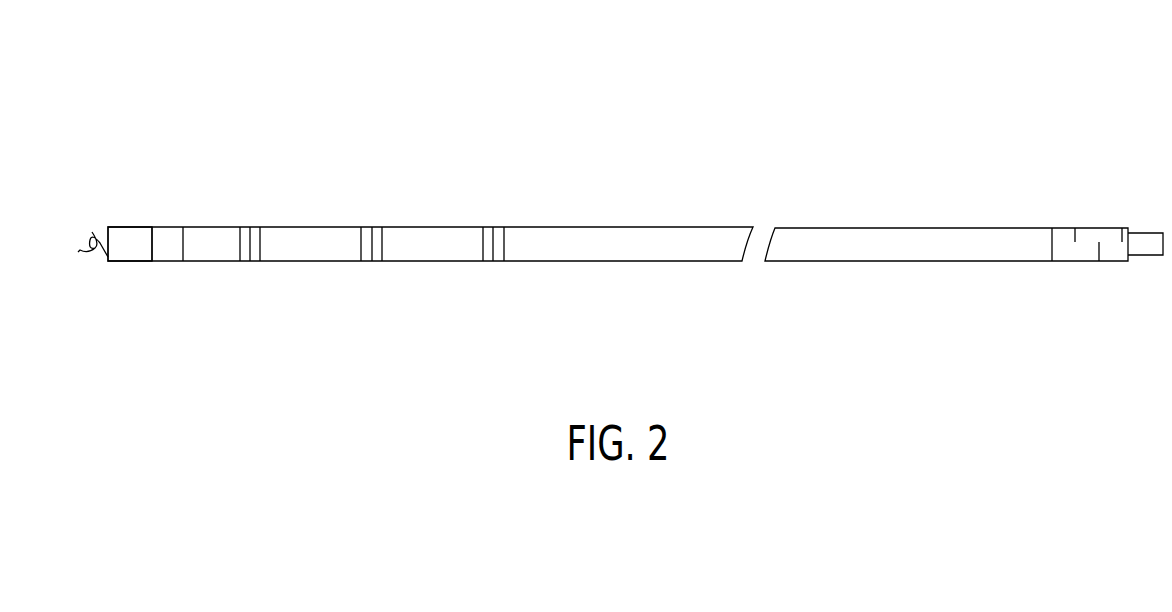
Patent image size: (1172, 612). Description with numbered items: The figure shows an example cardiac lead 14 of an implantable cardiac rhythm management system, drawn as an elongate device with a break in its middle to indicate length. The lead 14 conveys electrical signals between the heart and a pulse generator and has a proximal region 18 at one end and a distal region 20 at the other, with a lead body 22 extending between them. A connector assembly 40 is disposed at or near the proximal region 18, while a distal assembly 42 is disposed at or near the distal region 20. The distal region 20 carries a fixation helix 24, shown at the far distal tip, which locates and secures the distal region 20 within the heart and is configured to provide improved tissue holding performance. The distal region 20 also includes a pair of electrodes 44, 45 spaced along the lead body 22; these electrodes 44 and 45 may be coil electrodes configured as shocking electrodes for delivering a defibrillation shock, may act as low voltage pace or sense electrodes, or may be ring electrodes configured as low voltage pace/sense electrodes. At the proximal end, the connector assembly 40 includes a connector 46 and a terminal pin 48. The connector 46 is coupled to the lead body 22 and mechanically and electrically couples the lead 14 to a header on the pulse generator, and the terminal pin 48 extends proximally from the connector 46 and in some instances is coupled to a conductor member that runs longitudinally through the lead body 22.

The cardiac lead 14 is at (503, 108).
The proximal region 18 is at (919, 195).
The distal region 20 is at (286, 277).
The lead body 22 is at (558, 236).
The fixation helix 24 is at (92, 232).
The connector assembly 40 is at (1087, 266).
The distal assembly 42 is at (128, 224).
The electrode 44 is at (340, 240).
The electrode 45 is at (437, 238).
The connector 46 is at (1094, 238).
The terminal pin 48 is at (1150, 243).